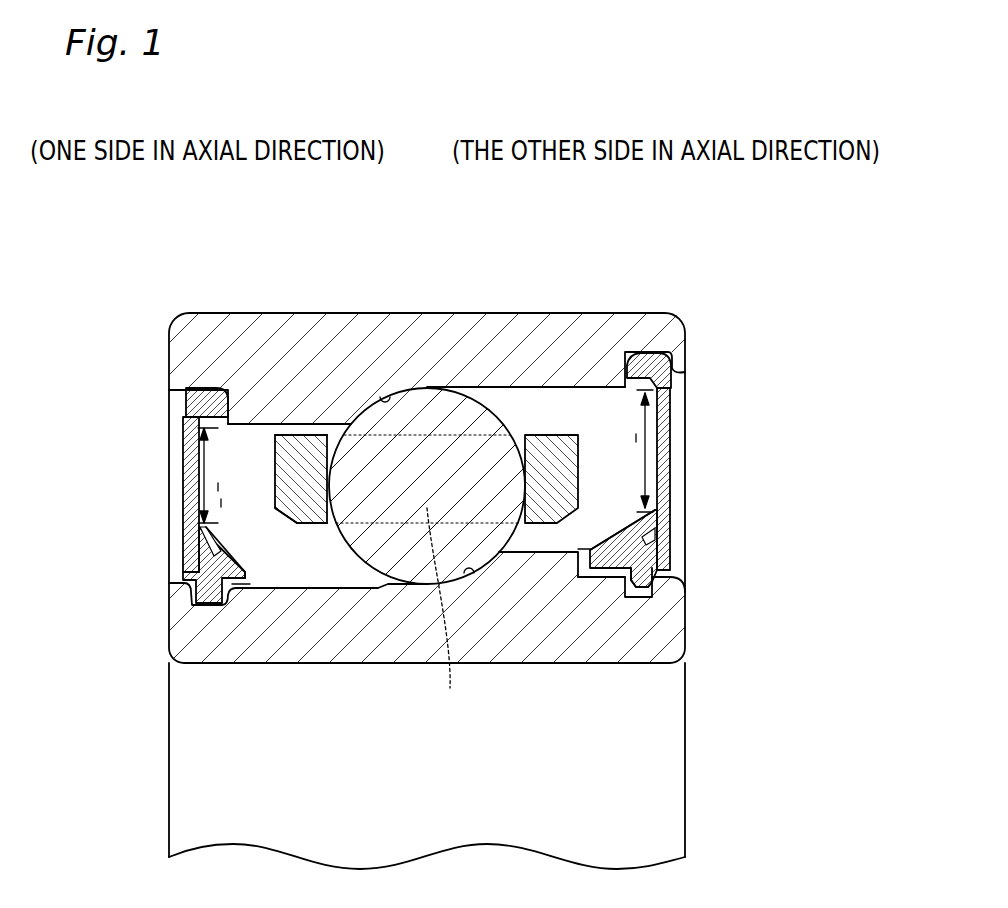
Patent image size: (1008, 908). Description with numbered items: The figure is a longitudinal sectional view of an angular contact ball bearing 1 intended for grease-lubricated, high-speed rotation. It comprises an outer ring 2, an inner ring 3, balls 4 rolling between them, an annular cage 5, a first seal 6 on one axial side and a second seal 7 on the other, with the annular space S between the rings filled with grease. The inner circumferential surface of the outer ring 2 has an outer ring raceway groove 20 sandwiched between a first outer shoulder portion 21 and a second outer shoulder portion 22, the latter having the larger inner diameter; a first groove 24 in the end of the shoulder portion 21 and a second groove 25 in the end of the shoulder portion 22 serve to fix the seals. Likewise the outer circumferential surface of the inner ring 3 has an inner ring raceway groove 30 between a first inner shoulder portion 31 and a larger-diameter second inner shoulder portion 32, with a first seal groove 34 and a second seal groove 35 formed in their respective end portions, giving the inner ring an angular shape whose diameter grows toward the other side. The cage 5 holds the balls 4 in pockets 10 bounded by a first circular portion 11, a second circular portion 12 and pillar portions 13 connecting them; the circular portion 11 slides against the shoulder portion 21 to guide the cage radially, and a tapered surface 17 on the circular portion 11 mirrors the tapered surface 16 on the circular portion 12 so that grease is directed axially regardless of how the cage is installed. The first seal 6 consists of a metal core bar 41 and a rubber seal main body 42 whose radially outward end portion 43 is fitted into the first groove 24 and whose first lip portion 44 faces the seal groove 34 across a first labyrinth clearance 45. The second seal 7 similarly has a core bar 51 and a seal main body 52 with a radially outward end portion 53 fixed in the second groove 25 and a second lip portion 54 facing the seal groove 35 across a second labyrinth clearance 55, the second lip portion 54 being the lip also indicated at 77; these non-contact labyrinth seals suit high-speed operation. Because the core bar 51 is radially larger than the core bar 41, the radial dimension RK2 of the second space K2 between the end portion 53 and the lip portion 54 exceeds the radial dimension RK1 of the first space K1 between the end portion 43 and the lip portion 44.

The angular contact ball bearing 1 is at (503, 312).
The outer ring 2 is at (427, 417).
The inner ring 3 is at (426, 559).
The ball 4 is at (437, 420).
The cage 5 is at (297, 433).
The first seal 6 is at (180, 430).
The second seal 7 is at (673, 468).
The pocket 10 is at (332, 524).
The first circular portion 11 is at (277, 467).
The second circular portion 12 is at (570, 470).
The pillar portion 13 is at (445, 612).
The tapered surface 16 is at (568, 528).
The tapered surface 17 is at (284, 532).
The outer ring raceway groove 20 is at (385, 398).
The first outer shoulder portion 21 is at (262, 424).
The second outer shoulder portion 22 is at (573, 382).
The first groove 24 is at (176, 410).
The second groove 25 is at (668, 368).
The inner ring raceway groove 30 is at (468, 573).
The first inner shoulder portion 31 is at (280, 596).
The second inner shoulder portion 32 is at (542, 557).
The first seal groove 34 is at (198, 590).
The second seal groove 35 is at (660, 580).
The core bar 41 is at (186, 444).
The seal main body 42 is at (183, 553).
The radially outward end portion 43 is at (212, 403).
The first lip portion 44 is at (227, 552).
The first labyrinth clearance 45 is at (245, 582).
The core bar 51 is at (672, 418).
The seal main body 52 is at (665, 547).
The radially outward end portion 53 is at (643, 362).
The second lip portion 54 is at (601, 567).
The second labyrinth clearance 55 is at (583, 548).
The lip of second seal 77 is at (633, 525).
The first space K1 is at (218, 487).
The second space K2 is at (636, 438).
The annular space S is at (221, 503).
The radial dimension RK1 is at (214, 475).
The radial dimension RK2 is at (635, 451).